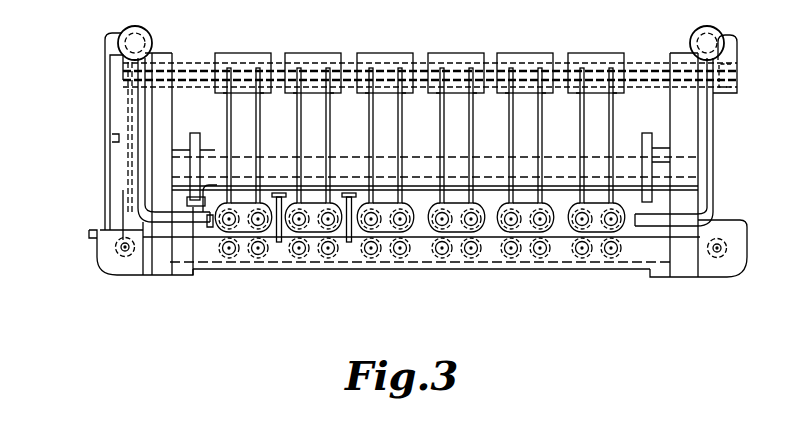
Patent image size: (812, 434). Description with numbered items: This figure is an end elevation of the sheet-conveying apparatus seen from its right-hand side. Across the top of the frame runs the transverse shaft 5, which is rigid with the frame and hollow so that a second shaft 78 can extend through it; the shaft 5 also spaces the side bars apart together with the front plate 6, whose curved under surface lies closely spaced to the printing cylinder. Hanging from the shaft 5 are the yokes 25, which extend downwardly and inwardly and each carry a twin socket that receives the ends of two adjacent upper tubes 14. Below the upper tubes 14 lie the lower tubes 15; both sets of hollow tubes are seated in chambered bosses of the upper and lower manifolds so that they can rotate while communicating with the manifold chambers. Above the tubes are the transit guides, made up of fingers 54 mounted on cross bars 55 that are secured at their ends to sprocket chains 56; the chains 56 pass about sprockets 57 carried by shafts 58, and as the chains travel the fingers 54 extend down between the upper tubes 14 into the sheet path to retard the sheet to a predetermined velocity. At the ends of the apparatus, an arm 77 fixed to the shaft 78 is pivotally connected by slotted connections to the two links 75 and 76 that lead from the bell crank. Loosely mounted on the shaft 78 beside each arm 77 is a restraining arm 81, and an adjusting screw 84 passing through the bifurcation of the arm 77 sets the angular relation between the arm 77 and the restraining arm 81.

The transverse shaft 5 is at (650, 63).
The front plate 6 is at (507, 269).
The upper tubes 14 is at (469, 210).
The lower tubes 15 is at (470, 240).
The yokes 25 is at (308, 129).
The fingers 54 is at (278, 244).
The cross bars 55 is at (336, 192).
The sprocket chains 56 is at (198, 207).
The sprockets 57 is at (198, 132).
The shafts 58 is at (562, 160).
The link 75 is at (106, 100).
The link 76 is at (112, 138).
The arm 77 is at (110, 52).
The shaft 78 is at (735, 82).
The restraining arm 81 is at (136, 153).
The adjusting screw 84 is at (138, 31).